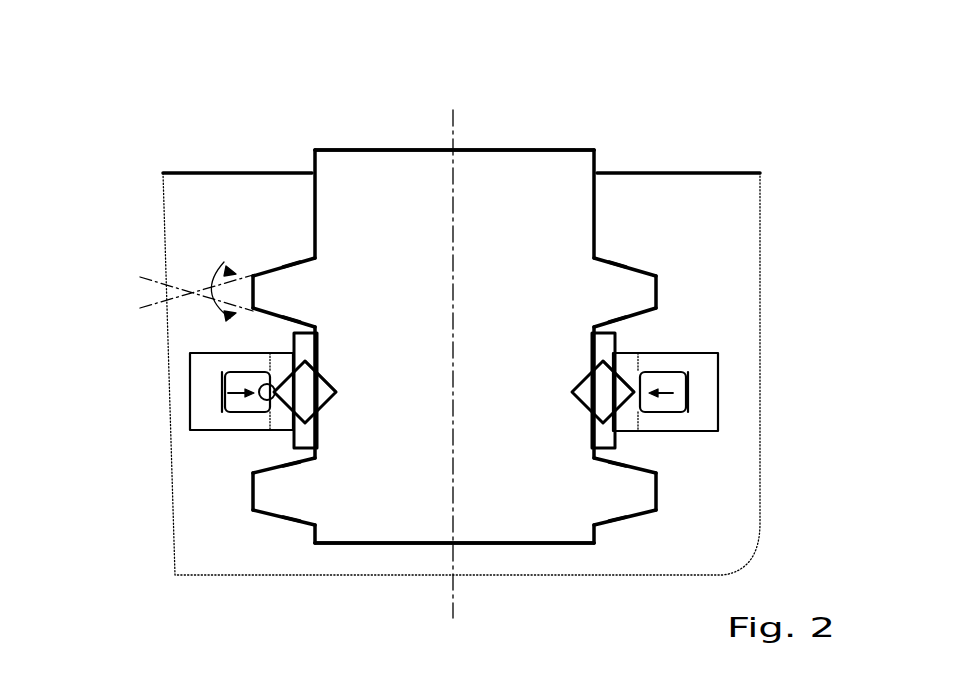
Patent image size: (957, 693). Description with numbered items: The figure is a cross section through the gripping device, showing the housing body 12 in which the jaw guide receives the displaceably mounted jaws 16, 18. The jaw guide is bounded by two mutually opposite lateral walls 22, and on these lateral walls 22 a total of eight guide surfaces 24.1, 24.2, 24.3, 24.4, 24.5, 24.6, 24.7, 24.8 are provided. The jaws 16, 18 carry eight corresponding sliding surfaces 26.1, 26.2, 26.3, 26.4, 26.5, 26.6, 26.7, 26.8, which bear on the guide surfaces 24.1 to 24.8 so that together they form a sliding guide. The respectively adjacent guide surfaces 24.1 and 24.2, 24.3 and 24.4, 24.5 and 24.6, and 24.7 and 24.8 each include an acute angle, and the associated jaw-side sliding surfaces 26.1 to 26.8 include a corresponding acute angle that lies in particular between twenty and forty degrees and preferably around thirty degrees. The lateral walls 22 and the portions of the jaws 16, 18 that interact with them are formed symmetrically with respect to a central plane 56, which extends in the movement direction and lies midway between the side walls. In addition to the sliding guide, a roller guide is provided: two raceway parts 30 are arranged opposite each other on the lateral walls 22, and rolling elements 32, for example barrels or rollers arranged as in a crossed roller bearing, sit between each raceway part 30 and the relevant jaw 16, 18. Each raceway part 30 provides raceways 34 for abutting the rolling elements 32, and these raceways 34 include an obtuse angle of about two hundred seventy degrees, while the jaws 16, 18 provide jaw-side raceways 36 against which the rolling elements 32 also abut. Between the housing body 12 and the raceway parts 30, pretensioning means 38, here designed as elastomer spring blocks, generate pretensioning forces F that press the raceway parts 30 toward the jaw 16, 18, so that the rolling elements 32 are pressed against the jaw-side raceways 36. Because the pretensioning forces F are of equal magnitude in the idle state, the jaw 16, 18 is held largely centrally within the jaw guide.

The housing body 12 is at (667, 190).
The jaw 16 is at (480, 180).
The jaw 18 is at (454, 346).
The lateral wall 22 is at (312, 208).
The guide surface 24.1 is at (267, 270).
The guide surface 24.2 is at (258, 316).
The guide surface 24.3 is at (262, 468).
The guide surface 24.4 is at (250, 516).
The guide surface 24.5 is at (637, 268).
The guide surface 24.6 is at (640, 317).
The guide surface 24.7 is at (643, 468).
The guide surface 24.8 is at (637, 520).
The sliding surface 26.1 is at (283, 270).
The sliding surface 26.2 is at (283, 316).
The sliding surface 26.3 is at (290, 472).
The sliding surface 26.4 is at (290, 518).
The sliding surface 26.5 is at (627, 267).
The sliding surface 26.6 is at (630, 316).
The sliding surface 26.7 is at (612, 470).
The sliding surface 26.8 is at (612, 520).
The raceway part 30 is at (240, 383).
The rolling element 32 is at (312, 415).
The raceway 34 is at (282, 373).
The jaw-side raceway 36 is at (337, 398).
The pretensioning means 38 is at (223, 390).
The pretensioning force F is at (240, 396).
The central plane 56 is at (455, 122).